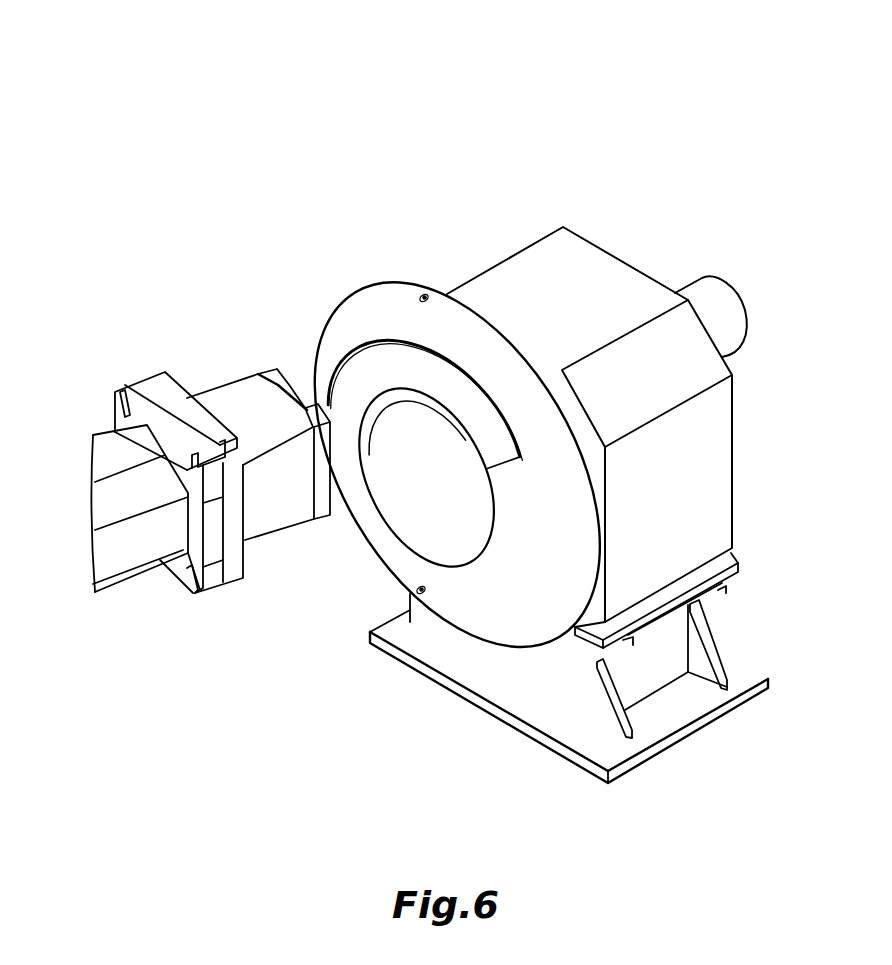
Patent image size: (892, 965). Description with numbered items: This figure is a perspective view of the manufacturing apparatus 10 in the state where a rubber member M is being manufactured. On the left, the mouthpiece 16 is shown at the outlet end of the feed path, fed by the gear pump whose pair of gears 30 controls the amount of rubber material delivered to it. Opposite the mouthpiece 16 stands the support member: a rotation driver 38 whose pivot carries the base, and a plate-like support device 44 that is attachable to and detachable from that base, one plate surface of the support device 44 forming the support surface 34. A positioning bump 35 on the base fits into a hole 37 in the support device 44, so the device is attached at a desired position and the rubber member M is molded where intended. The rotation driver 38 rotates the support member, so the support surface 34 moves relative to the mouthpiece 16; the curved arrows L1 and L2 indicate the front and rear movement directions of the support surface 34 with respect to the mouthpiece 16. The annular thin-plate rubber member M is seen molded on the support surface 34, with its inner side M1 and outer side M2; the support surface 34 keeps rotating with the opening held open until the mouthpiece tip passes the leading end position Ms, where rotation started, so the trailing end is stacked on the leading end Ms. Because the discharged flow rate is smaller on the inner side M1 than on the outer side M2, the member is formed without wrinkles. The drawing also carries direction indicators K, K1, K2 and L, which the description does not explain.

The manufacturing apparatus 10 is at (418, 38).
The mouthpiece 16 is at (325, 530).
The pair of gears 30 is at (147, 575).
The support surface 34 is at (513, 625).
The positioning bump 35 is at (422, 296).
The hole 37 is at (428, 296).
The rotation driver 38 is at (627, 278).
The support device 44 is at (588, 618).
The rubber member M is at (458, 403).
The inner side M1 is at (388, 390).
The outer side M2 is at (498, 413).
The leading end position Ms is at (503, 463).
The direction K is at (178, 330).
The direction K1 is at (178, 312).
The direction K2 is at (107, 337).
The rotation direction L is at (353, 260).
The front movement direction L1 is at (340, 237).
The rear movement direction L2 is at (293, 282).